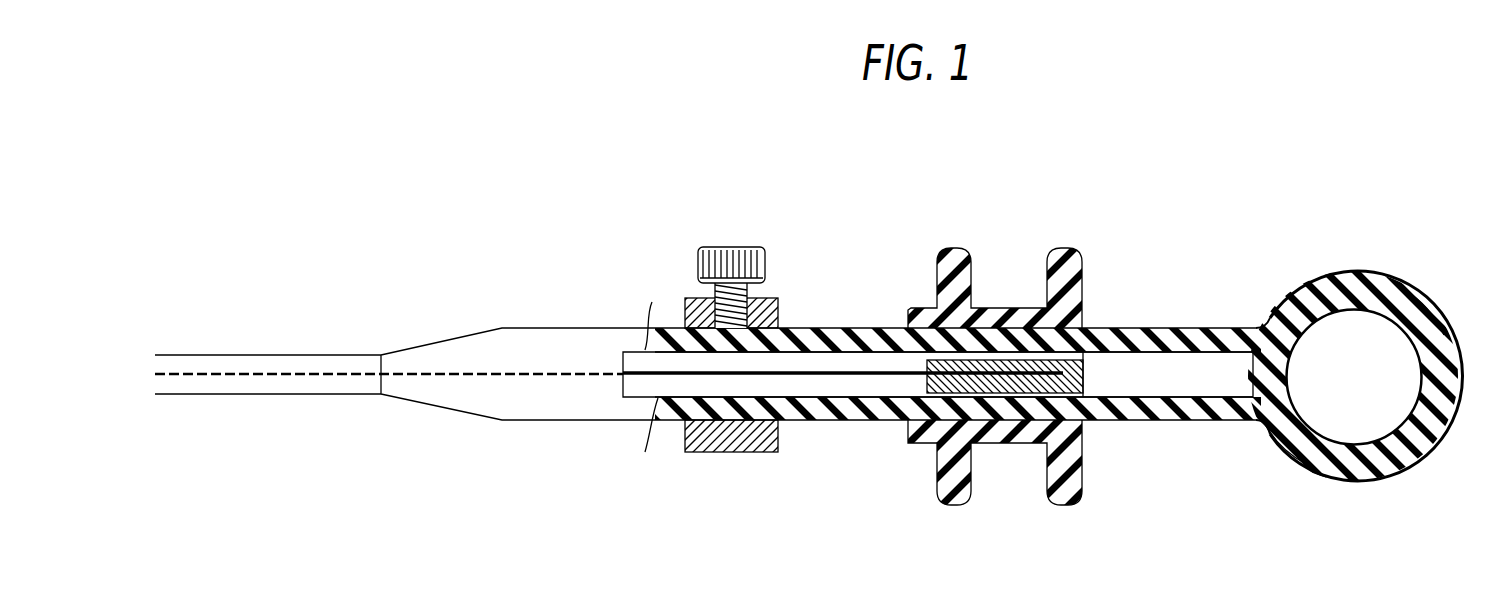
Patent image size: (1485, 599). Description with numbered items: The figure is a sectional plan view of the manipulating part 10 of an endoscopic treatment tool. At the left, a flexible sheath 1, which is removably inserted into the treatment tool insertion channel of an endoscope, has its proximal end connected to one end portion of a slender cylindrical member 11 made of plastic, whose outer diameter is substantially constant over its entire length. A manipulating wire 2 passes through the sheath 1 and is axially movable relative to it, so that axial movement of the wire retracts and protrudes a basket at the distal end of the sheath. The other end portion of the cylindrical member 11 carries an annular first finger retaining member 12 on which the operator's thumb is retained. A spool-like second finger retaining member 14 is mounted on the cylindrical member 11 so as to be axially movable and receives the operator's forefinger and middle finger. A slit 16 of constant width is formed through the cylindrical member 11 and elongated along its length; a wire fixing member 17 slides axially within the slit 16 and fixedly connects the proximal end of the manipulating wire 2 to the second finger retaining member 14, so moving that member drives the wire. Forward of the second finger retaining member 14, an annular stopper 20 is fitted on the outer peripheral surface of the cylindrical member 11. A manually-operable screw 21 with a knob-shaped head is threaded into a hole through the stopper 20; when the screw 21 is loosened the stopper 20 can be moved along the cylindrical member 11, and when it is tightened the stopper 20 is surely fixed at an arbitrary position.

The flexible sheath 1 is at (326, 355).
The manipulating wire 2 is at (845, 377).
The manipulating part 10 is at (1207, 279).
The cylindrical member 11 is at (1155, 423).
The first finger retaining member 12 is at (1350, 271).
The second finger retaining member 14 is at (1012, 308).
The slit 16 is at (1133, 347).
The wire fixing member 17 is at (1082, 397).
The stopper 20 is at (720, 452).
The manually-operable screw 21 is at (743, 248).